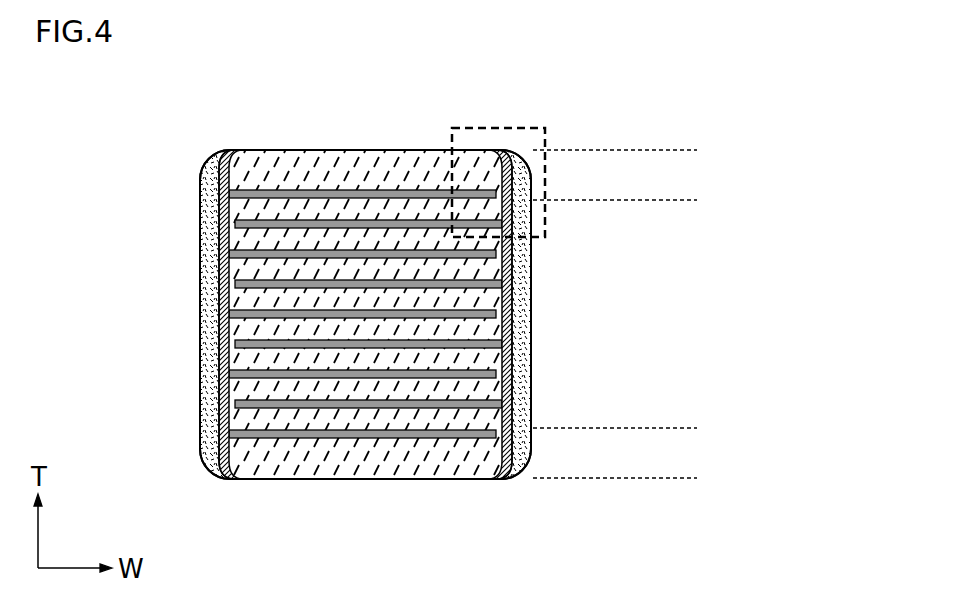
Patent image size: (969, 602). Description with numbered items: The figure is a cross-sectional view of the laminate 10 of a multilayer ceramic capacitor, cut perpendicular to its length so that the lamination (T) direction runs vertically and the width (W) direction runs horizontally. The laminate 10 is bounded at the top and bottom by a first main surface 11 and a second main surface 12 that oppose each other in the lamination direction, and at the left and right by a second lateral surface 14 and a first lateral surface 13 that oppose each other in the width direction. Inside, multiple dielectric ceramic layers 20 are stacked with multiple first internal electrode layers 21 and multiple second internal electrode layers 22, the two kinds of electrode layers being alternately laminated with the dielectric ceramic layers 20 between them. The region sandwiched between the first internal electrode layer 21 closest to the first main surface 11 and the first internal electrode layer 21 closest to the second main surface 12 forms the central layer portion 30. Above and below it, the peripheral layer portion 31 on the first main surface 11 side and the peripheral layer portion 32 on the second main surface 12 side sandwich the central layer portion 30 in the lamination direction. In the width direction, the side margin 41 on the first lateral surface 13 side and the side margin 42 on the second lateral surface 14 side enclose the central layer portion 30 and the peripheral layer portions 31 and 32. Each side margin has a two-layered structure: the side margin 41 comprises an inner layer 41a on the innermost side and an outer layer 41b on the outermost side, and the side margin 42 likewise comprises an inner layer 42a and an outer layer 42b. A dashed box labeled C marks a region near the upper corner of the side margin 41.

The laminate 10 is at (182, 122).
The first main surface 11 is at (265, 150).
The second main surface 12 is at (445, 480).
The first lateral surface 13 is at (532, 372).
The second lateral surface 14 is at (200, 366).
The dielectric ceramic layers 20 is at (378, 358).
The first internal electrode layers 21 is at (373, 312).
The second internal electrode layers 22 is at (405, 282).
The central layer portion 30 is at (697, 200).
The peripheral layer portion 31 is at (697, 150).
The peripheral layer portion 32 is at (697, 428).
The side margin 41 is at (645, 236).
The inner layer 41a is at (505, 258).
The outer layer 41b is at (520, 298).
The side margin 42 is at (84, 193).
The inner layer 42a is at (226, 215).
The outer layer 42b is at (212, 255).
The region C (enlarged portion) C is at (511, 170).